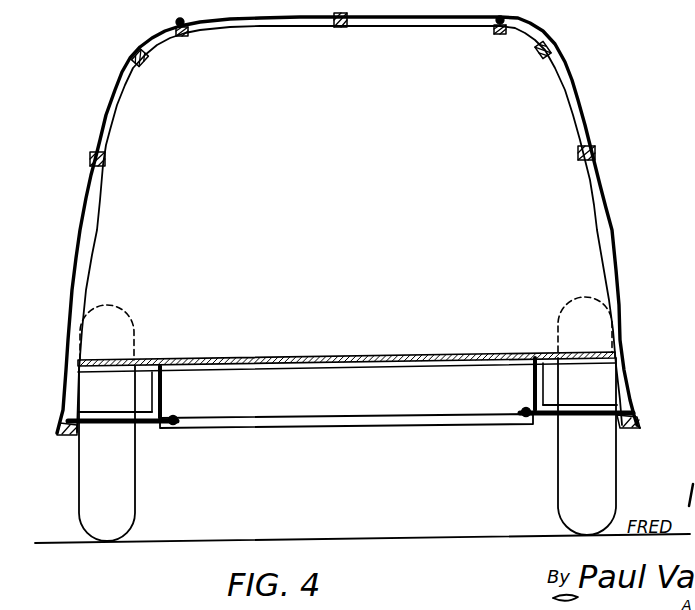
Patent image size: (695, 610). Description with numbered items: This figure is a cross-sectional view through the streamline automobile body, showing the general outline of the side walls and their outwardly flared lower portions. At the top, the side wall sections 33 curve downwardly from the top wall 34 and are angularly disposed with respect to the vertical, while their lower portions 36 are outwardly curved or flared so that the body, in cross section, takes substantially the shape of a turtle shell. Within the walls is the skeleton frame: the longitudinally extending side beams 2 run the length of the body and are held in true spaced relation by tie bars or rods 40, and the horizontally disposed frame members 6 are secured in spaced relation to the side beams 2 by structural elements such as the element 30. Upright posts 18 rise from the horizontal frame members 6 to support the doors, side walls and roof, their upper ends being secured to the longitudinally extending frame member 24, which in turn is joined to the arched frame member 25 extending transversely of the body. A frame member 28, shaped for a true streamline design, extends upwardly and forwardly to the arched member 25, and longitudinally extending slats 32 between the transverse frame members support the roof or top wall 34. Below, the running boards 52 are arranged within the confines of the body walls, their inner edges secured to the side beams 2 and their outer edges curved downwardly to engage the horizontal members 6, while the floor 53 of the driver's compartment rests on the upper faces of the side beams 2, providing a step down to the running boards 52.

The side beam 2 is at (165, 397).
The horizontal frame member 6 is at (72, 432).
The upright post 18 is at (97, 218).
The longitudinally extending frame member 24 is at (145, 60).
The arched frame member 25 is at (383, 28).
The frame member 28 is at (106, 160).
The structural element 30 is at (100, 375).
The longitudinally extending slat 32 is at (185, 33).
The side wall section 33 is at (80, 228).
The top wall 34 is at (307, 22).
The lower portion of side wall section 36 is at (62, 411).
The tie bar 40 is at (363, 428).
The running board 52 is at (143, 424).
The floor 53 is at (322, 353).